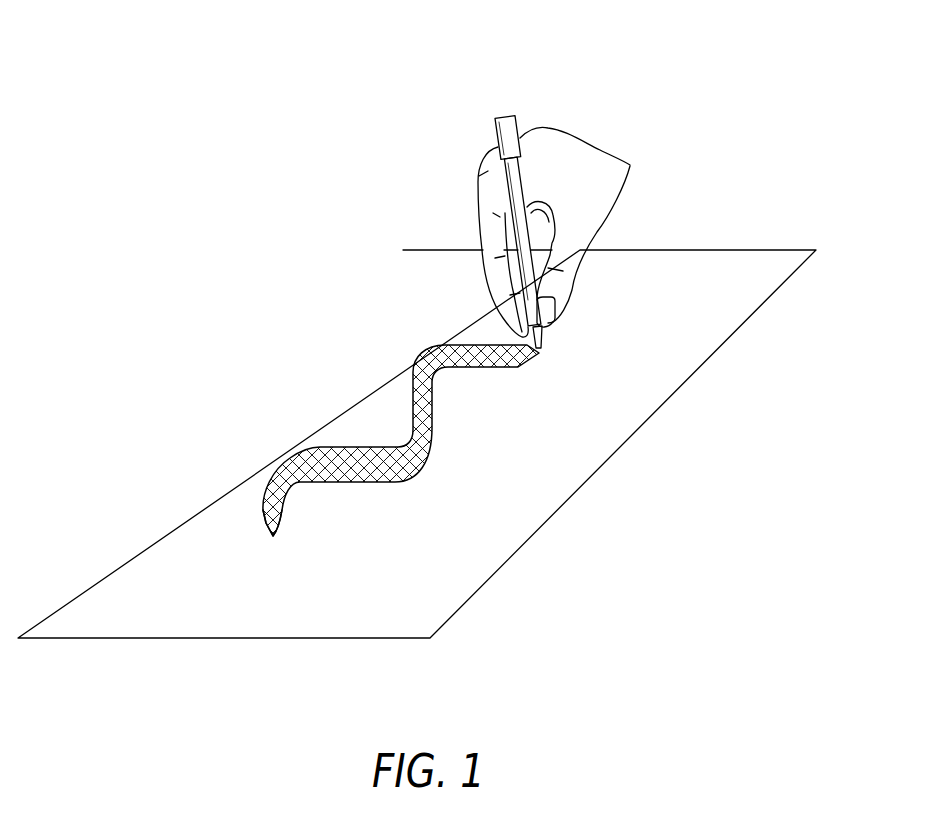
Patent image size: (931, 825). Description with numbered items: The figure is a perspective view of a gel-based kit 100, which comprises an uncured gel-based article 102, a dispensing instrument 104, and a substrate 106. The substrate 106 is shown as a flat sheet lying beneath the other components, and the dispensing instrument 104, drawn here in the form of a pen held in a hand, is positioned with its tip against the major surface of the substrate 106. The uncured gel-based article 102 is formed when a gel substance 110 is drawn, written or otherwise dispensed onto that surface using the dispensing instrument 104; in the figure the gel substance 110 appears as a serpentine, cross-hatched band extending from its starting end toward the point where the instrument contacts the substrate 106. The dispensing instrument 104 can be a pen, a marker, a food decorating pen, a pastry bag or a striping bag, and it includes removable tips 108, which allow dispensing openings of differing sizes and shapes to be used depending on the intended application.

The gel-based kit 100 is at (417, 322).
The uncured gel-based article 102 is at (385, 474).
The dispensing instrument 104 is at (550, 234).
The substrate 106 is at (541, 516).
The removable tips 108 is at (545, 338).
The gel substance 110 is at (263, 513).